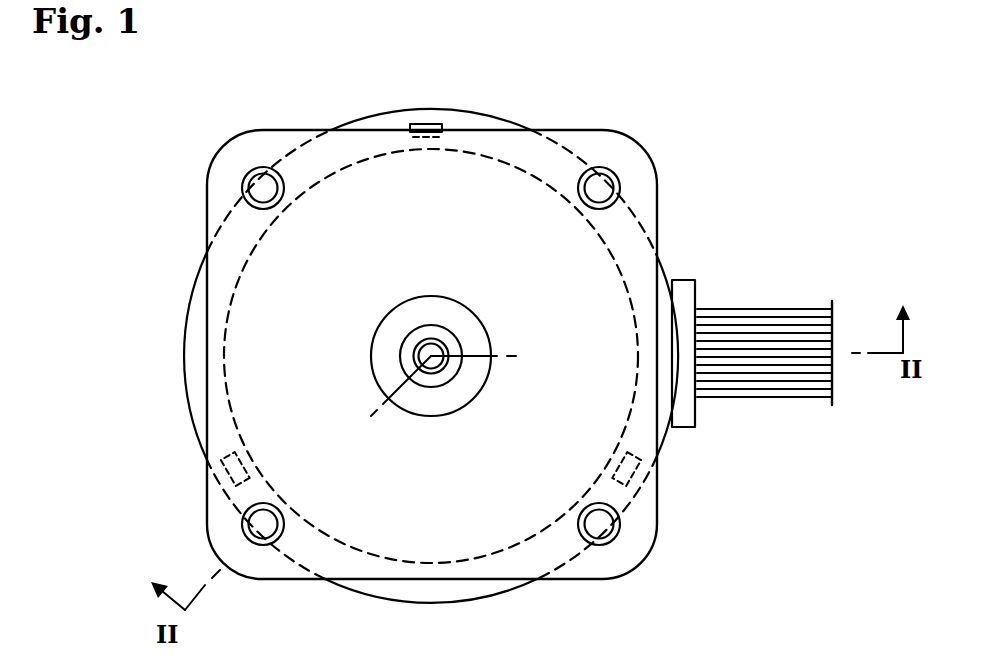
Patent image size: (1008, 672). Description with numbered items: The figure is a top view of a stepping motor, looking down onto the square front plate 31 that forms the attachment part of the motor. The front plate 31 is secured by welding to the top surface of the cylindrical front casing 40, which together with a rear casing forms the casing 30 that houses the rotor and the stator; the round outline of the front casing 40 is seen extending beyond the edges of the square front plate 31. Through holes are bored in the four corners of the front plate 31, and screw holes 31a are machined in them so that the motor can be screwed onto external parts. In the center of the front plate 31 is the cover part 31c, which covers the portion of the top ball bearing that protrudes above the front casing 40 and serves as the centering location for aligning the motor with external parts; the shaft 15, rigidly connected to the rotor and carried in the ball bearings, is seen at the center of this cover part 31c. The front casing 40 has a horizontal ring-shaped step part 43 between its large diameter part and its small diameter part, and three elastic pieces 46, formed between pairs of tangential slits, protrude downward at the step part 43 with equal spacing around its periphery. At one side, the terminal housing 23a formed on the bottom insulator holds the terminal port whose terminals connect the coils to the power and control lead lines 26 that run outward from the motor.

The shaft 15 is at (443, 370).
The terminal housing 23a is at (698, 300).
The power and control lead lines 26 is at (782, 397).
The casing 30 is at (494, 111).
The front plate 31 is at (205, 353).
The screw holes 31a is at (590, 190).
The cover part 31c is at (420, 303).
The front casing 40 is at (192, 290).
The step part 43 is at (197, 393).
The elastic pieces 46 is at (428, 124).